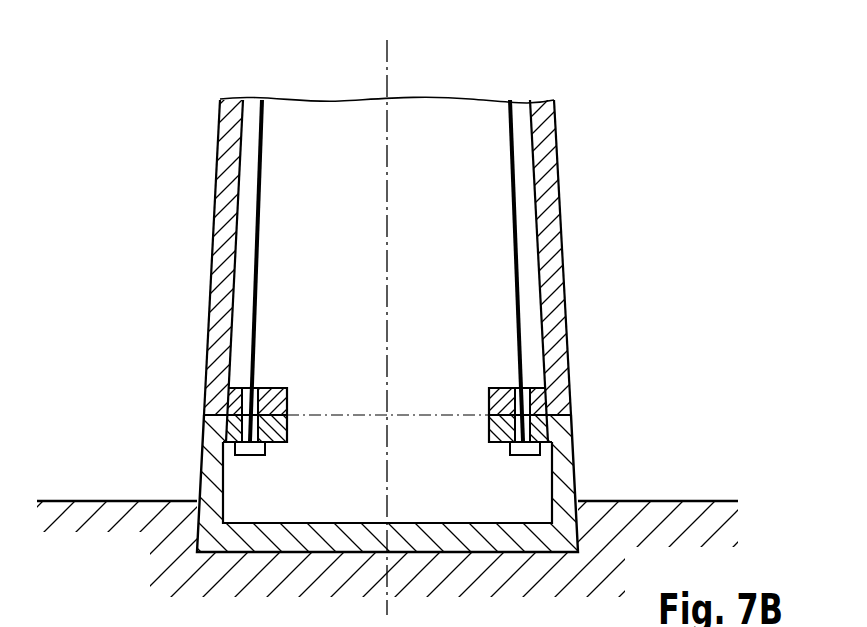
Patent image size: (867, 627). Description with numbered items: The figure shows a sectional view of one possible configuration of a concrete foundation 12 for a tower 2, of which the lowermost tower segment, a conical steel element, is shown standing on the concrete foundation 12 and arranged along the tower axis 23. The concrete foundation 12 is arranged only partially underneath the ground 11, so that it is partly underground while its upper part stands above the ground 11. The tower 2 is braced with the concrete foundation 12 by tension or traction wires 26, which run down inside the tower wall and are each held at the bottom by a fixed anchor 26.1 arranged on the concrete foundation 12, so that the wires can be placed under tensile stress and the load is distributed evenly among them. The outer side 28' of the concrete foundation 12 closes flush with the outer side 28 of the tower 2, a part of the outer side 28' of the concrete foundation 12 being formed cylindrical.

The tower 2 is at (212, 215).
The ground 11 is at (683, 500).
The concrete foundation 12 is at (201, 480).
The tower axis 23 is at (388, 57).
The tension or traction wires 26 is at (518, 301).
The fixed anchor 26.1 is at (553, 447).
The outer side of the tower 28 is at (588, 271).
The outer side of the concrete foundation 28' is at (348, 435).